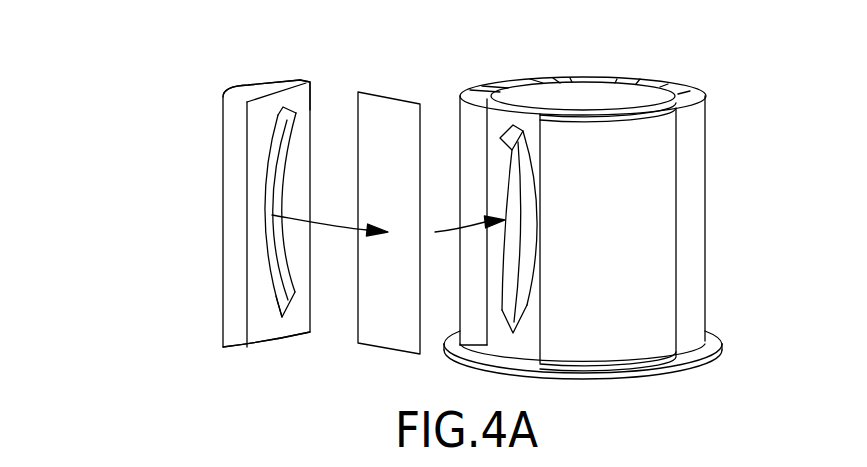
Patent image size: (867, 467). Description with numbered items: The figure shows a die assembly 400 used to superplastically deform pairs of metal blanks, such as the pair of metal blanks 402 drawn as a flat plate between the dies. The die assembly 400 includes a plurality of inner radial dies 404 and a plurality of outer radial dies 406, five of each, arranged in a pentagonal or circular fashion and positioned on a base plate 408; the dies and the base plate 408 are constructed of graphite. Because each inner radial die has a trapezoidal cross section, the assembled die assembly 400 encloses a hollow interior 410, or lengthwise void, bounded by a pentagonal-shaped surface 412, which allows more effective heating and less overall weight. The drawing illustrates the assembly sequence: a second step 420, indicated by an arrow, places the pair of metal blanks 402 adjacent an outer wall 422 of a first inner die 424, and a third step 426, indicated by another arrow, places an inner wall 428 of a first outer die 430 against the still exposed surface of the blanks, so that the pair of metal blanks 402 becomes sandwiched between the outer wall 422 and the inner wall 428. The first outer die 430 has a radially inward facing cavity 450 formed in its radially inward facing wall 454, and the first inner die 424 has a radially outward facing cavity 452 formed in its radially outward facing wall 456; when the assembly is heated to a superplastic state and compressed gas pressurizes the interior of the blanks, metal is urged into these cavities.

The die assembly 400 is at (127, 35).
The pair of metal blanks 402 is at (385, 88).
The inner radial dies 404 is at (493, 110).
The outer radial dies 406 is at (234, 142).
The base plate 408 is at (728, 350).
The hollow interior 410 is at (592, 90).
The pentagonal-shaped surface 412 is at (627, 110).
The second step 420 is at (465, 222).
The outer wall 422 is at (502, 120).
The first inner die 424 is at (540, 110).
The third step 426 is at (325, 212).
The inner wall 428 is at (283, 100).
The first outer die 430 is at (243, 94).
The radially inward facing cavity 450 is at (272, 270).
The radially outward facing cavity 452 is at (522, 280).
The radially inward facing wall 454 is at (252, 318).
The radially outward facing wall 456 is at (495, 330).